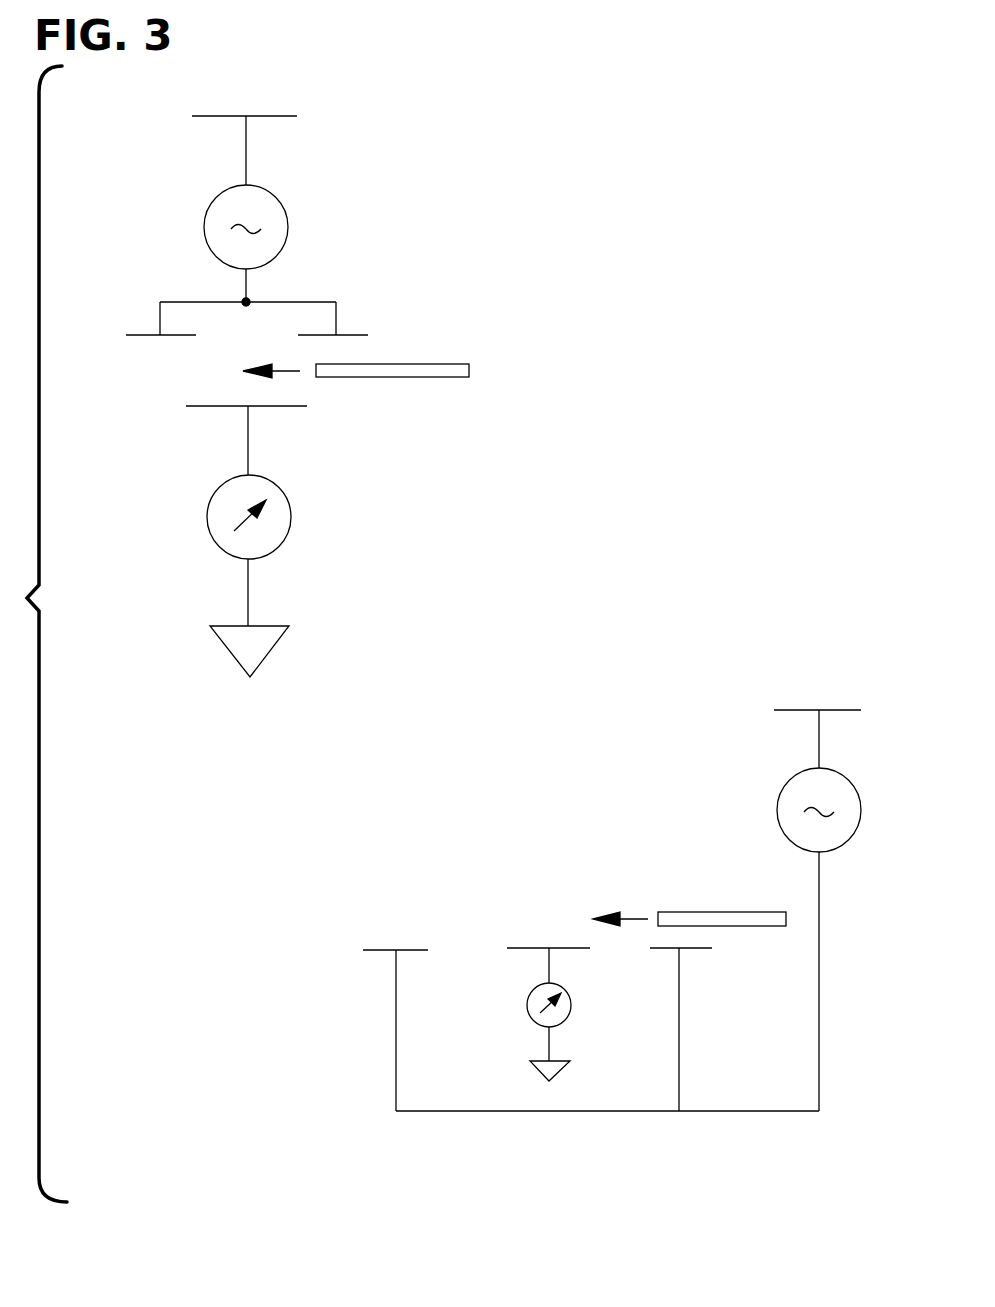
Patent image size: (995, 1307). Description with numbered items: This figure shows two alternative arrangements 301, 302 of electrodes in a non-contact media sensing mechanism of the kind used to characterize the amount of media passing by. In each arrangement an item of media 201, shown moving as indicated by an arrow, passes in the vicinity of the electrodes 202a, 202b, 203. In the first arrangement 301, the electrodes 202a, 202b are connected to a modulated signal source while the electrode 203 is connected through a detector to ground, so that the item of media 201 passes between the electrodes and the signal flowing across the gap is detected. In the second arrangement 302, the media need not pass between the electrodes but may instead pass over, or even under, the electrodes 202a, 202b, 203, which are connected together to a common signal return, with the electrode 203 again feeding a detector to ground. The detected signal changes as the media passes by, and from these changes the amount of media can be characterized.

The item of media 201 is at (470, 364).
The electrode 202a is at (135, 334).
The electrode 202b is at (396, 316).
The electrode 203 is at (298, 408).
The first arrangement 301 is at (249, 711).
The second arrangement 302 is at (597, 1132).